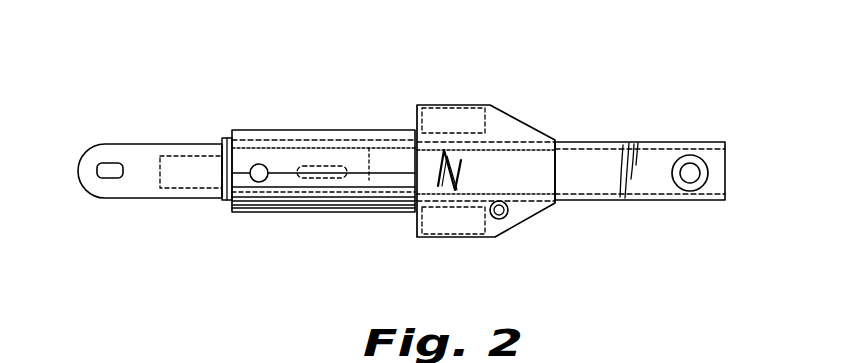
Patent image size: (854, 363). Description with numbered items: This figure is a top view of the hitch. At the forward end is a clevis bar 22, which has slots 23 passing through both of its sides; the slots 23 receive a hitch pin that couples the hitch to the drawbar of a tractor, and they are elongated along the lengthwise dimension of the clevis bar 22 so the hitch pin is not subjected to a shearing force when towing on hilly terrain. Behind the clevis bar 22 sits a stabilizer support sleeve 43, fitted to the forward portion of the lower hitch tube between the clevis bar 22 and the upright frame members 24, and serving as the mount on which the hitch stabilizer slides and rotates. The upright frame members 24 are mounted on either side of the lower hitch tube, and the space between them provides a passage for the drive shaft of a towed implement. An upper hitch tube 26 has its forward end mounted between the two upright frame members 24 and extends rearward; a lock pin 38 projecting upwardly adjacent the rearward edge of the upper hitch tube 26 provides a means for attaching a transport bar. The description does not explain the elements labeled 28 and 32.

The clevis bar 22 is at (123, 143).
The slots 23 is at (102, 167).
The stabilizer support sleeve 43 is at (335, 130).
The upright frame members 24 is at (420, 105).
The upper hitch tube 26 is at (613, 140).
The hub housing 28 is at (535, 212).
The eyelet 32 is at (689, 156).
The lock pin 38 is at (497, 220).